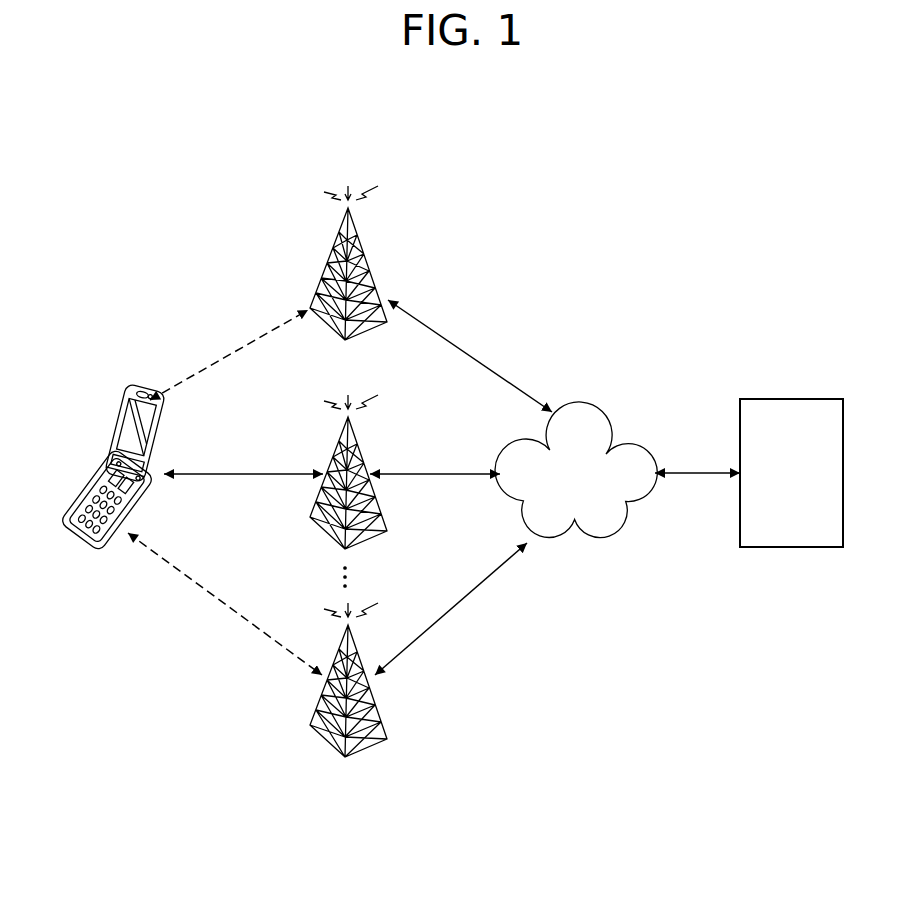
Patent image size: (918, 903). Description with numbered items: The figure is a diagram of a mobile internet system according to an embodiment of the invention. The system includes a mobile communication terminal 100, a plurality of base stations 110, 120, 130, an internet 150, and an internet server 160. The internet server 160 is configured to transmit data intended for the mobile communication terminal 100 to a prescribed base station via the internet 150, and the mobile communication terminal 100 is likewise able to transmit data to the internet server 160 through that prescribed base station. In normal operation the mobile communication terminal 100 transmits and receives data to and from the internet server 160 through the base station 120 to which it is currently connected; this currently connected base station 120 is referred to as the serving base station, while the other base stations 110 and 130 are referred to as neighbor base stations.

The mobile communication terminal 100 is at (128, 390).
The base station 110 is at (362, 226).
The base station 120 is at (362, 432).
The base station 130 is at (387, 728).
The internet 150 is at (575, 409).
The internet server 160 is at (792, 408).